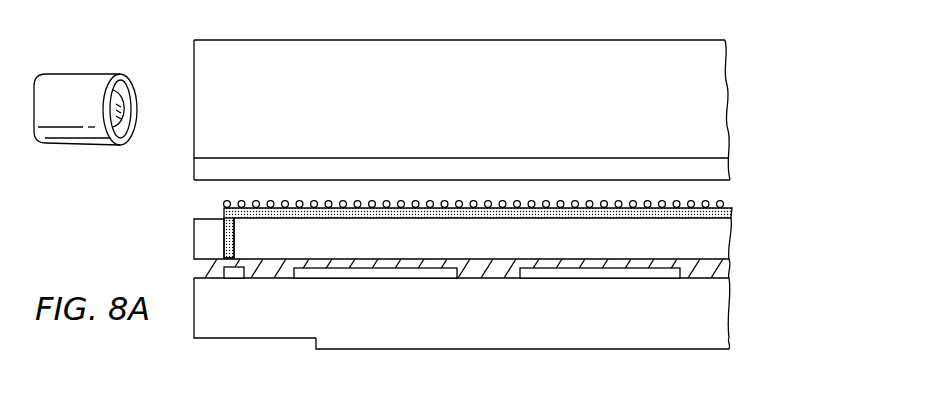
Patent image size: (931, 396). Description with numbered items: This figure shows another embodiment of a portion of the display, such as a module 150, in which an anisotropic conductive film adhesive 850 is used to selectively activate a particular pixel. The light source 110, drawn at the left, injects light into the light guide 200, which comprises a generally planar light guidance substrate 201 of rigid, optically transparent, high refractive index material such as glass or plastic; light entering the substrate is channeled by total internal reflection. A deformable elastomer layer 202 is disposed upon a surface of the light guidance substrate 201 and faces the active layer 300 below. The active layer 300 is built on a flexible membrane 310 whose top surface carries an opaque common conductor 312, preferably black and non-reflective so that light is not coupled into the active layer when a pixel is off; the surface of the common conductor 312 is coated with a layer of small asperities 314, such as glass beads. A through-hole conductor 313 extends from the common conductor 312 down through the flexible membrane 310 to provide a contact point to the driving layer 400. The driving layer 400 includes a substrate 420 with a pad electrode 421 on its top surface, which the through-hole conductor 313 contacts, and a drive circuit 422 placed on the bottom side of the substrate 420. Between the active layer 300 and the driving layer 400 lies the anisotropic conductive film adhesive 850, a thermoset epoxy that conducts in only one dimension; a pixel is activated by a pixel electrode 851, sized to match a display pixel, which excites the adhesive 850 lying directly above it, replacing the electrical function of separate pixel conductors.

The module 150 is at (120, 43).
The light source 110 is at (80, 148).
The light guide 200 is at (810, 42).
The light guidance substrate 201 is at (734, 59).
The deformable elastomer layer 202 is at (733, 168).
The active layer 300 is at (810, 202).
The flexible membrane 310 is at (731, 243).
The common conductor 312 is at (734, 213).
The through-hole conductor 313 is at (224, 232).
The asperities 314 is at (725, 203).
The driving layer 400 is at (810, 270).
The substrate 420 is at (275, 325).
The pad electrode 421 is at (232, 280).
The drive circuit 422 is at (568, 344).
The anisotropic conductive film adhesive 850 is at (497, 272).
The pixel electrode 851 is at (395, 278).